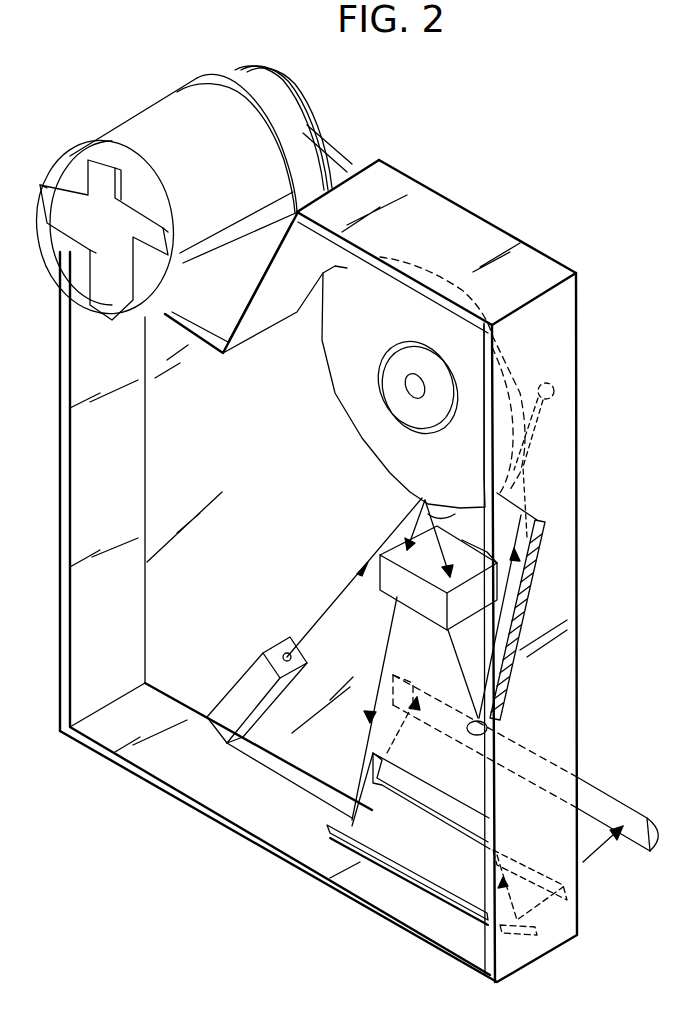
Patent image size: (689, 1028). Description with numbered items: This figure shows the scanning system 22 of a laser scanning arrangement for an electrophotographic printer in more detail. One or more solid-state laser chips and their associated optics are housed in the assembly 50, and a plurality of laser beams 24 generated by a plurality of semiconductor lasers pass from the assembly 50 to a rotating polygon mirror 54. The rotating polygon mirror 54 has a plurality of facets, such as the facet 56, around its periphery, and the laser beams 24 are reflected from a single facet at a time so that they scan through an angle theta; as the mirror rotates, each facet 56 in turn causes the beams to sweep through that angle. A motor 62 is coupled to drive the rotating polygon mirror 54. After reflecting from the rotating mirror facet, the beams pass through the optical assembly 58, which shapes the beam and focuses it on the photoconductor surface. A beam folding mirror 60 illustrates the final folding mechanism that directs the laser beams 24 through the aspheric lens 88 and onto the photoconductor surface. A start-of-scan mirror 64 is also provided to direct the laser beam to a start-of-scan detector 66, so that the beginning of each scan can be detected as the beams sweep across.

The scanning system 22 is at (466, 228).
The laser beams 24 is at (310, 628).
The assembly 50 is at (233, 693).
The rotating polygon mirror 54 is at (347, 375).
The facet 56 is at (408, 500).
The optical assembly 58 is at (397, 593).
The beam folding mirror 60 is at (328, 824).
The motor 62 is at (128, 130).
The start-of-scan mirror 64 is at (488, 731).
The start-of-scan detector 66 is at (557, 400).
The aspheric lens 88 is at (637, 807).